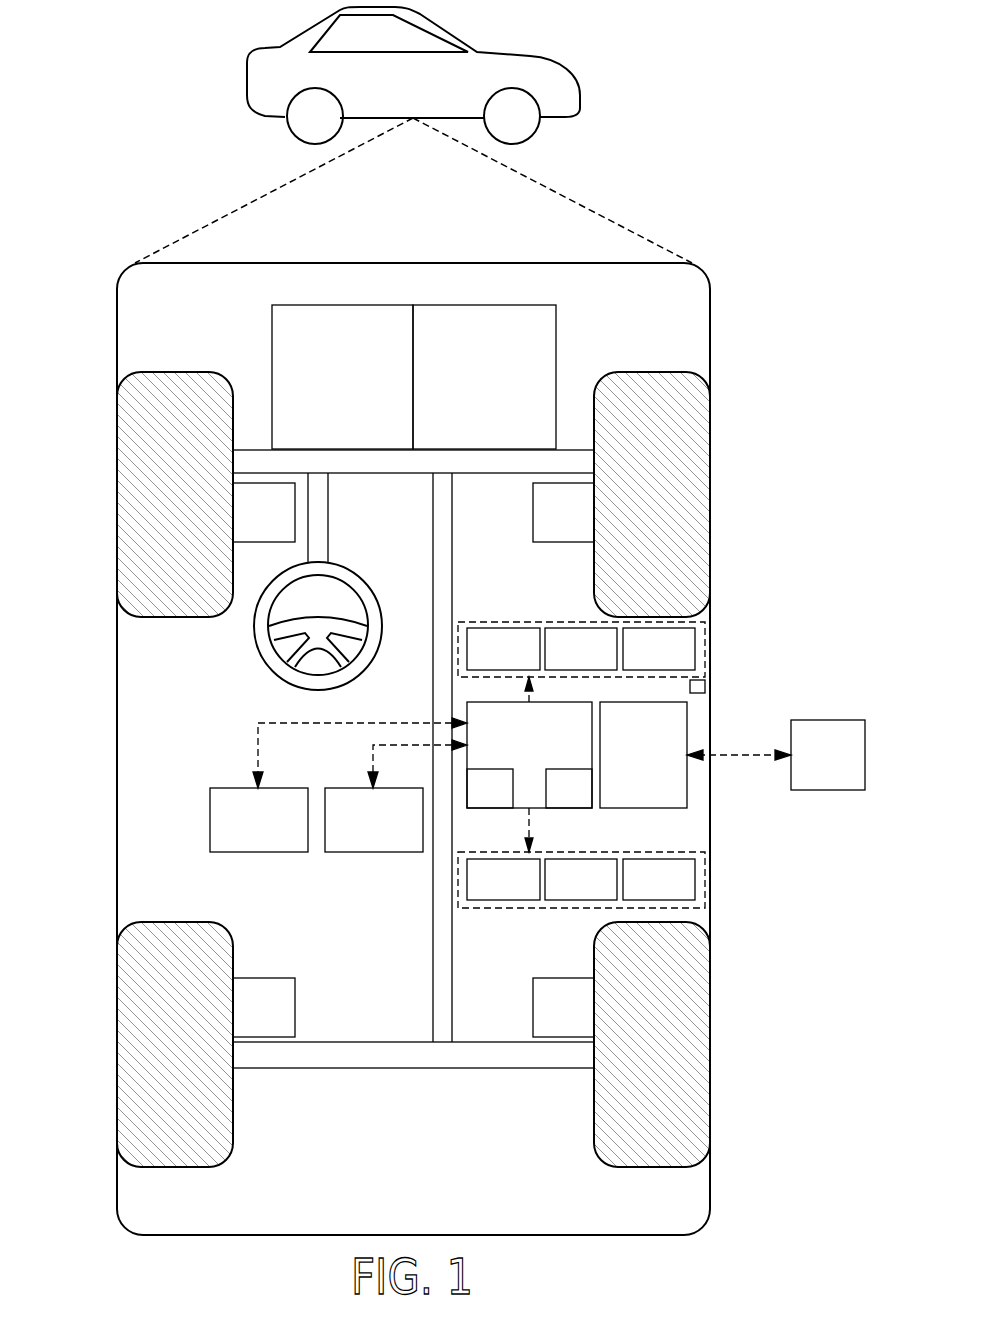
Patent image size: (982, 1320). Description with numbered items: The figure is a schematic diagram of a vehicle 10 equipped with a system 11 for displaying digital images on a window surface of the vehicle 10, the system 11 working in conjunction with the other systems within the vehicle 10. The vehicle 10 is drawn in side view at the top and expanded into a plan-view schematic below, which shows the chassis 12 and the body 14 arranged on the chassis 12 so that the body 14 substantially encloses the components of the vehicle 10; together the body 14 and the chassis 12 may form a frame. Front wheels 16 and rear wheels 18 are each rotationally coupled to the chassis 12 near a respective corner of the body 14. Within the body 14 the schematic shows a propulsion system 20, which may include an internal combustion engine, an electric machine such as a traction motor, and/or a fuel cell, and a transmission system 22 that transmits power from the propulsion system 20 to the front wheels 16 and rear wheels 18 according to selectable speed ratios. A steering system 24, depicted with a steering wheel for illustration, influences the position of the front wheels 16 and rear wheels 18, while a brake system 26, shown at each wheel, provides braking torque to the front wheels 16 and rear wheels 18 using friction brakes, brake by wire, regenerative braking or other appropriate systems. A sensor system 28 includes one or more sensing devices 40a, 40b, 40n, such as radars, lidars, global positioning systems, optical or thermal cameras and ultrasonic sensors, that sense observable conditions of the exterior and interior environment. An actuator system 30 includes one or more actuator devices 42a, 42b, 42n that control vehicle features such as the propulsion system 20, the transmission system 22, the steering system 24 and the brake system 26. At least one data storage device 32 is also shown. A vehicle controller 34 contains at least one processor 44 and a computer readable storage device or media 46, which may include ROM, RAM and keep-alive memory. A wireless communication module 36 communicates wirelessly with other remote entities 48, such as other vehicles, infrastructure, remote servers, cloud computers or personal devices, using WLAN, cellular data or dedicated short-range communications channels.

The vehicle 10 is at (428, 95).
The system 11 is at (245, 833).
The chassis 12 is at (433, 952).
The body 14 is at (117, 750).
The front wheels 16 is at (175, 372).
The rear wheels 18 is at (175, 1167).
The propulsion system 20 is at (329, 393).
The transmission system 22 is at (470, 391).
The steering system 24 is at (342, 507).
The brake system 26 is at (249, 526).
The sensor system 28 is at (581, 625).
The actuator system 30 is at (581, 902).
The data storage device 32 is at (360, 833).
The vehicle controller 34 is at (529, 755).
The wireless communication module 36 is at (629, 770).
The sensing device 40a is at (483, 663).
The sensing device 40b is at (561, 663).
The sensing device 40n is at (639, 663).
The actuator device 42a is at (483, 893).
The actuator device 42b is at (561, 893).
The actuator device 42n is at (639, 893).
The processor 44 is at (476, 803).
The computer readable storage device or media 46 is at (556, 803).
The remote entities 48 is at (814, 770).